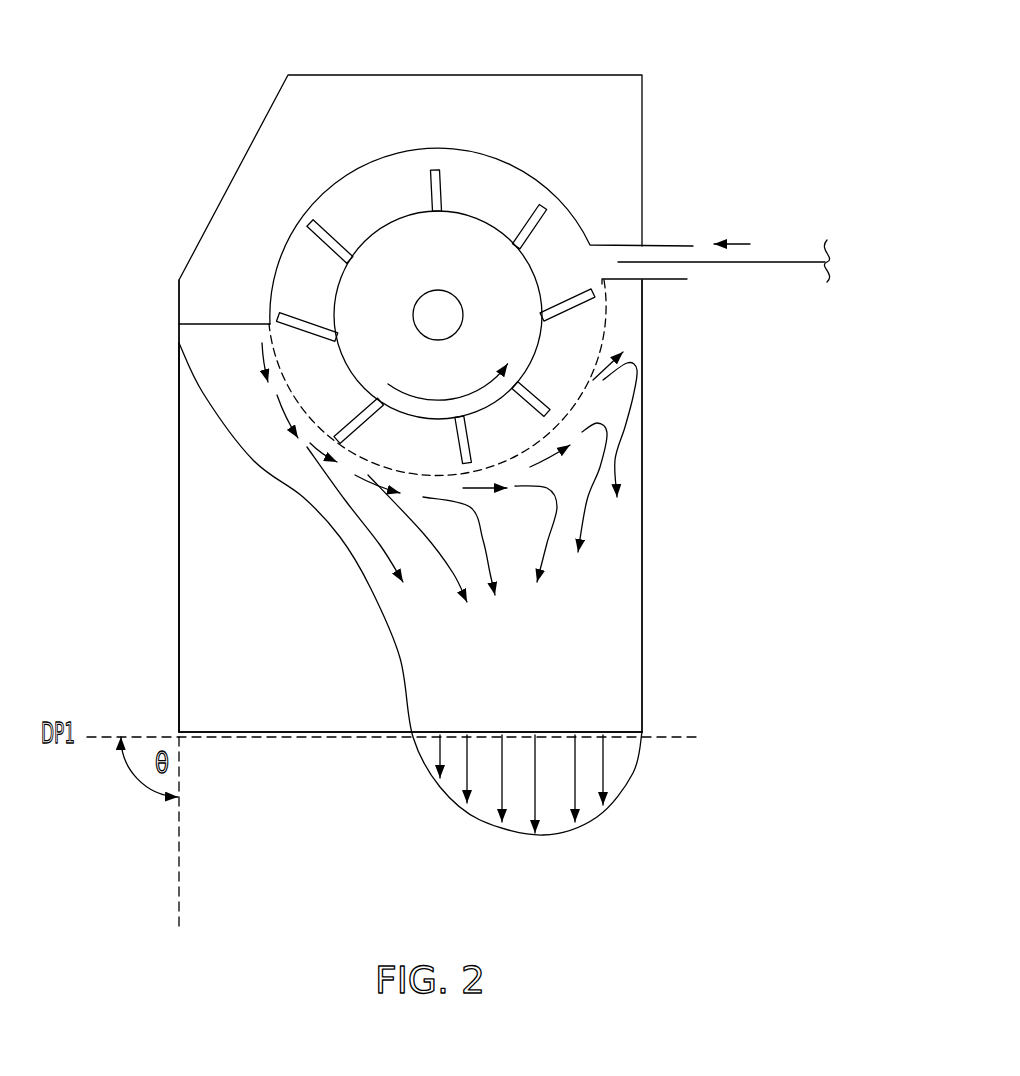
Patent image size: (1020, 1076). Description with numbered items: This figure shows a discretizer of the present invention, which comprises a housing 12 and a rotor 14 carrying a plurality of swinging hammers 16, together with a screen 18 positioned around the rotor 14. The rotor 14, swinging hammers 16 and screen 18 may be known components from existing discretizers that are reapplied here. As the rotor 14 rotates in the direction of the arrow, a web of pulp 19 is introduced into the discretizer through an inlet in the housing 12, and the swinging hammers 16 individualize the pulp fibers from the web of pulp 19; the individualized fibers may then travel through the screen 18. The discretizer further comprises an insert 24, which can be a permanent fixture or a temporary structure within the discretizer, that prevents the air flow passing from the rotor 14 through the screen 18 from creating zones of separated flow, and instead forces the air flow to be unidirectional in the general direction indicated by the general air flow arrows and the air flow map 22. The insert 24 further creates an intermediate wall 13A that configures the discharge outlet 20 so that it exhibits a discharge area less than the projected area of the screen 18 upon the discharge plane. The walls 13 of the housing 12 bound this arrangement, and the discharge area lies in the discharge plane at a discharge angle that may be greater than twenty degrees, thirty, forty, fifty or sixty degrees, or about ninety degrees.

The housing 12 is at (550, 75).
The housing side wall 13 is at (178, 483).
The intermediate wall 13A is at (405, 652).
The rotor 14 is at (475, 245).
The swinging hammers 16 is at (538, 218).
The screen 18 is at (643, 398).
The web of pulp 19 is at (782, 262).
The discharge outlet 20 is at (518, 740).
The air flow map 22 is at (606, 764).
The insert 24 is at (196, 537).